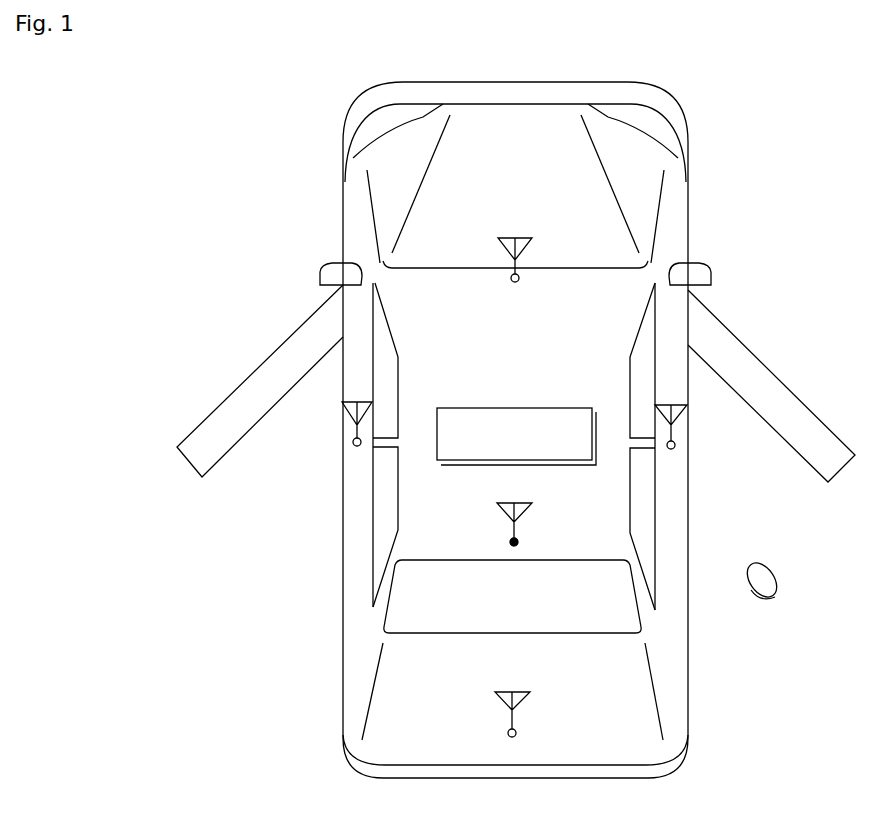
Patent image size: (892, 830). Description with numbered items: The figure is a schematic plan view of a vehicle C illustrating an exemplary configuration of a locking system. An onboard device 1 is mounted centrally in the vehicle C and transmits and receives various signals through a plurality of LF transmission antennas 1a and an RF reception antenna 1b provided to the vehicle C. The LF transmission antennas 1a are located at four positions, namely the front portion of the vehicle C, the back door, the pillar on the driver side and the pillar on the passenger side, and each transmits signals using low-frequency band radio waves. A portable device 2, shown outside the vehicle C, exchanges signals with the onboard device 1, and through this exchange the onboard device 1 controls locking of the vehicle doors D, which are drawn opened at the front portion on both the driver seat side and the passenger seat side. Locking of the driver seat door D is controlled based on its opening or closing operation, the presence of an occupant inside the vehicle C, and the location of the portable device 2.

The onboard device 1 is at (545, 408).
The LF transmission antenna 1a is at (527, 237).
The RF reception antenna 1b is at (528, 505).
The portable device 2 is at (768, 563).
The vehicle C is at (690, 138).
The vehicle door D is at (287, 338).